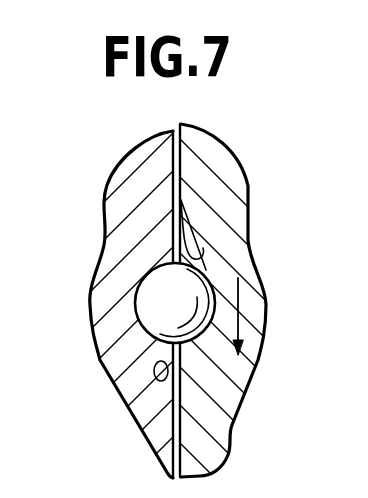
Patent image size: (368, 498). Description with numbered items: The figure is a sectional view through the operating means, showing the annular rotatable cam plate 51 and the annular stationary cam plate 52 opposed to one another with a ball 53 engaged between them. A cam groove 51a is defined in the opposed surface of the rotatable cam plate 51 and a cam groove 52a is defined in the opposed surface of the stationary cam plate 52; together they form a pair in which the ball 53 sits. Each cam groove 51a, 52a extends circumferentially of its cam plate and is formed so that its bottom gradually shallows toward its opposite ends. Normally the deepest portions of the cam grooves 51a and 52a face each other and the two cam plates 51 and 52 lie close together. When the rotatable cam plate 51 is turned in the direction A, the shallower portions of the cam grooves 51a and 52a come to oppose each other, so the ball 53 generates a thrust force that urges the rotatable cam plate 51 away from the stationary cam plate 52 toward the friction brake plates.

The rotatable cam plate 51 is at (230, 400).
The stationary cam plate 52 is at (120, 224).
The cam groove 51a is at (200, 254).
The cam groove 52a is at (155, 373).
The ball 53 is at (150, 307).
The direction A is at (265, 313).